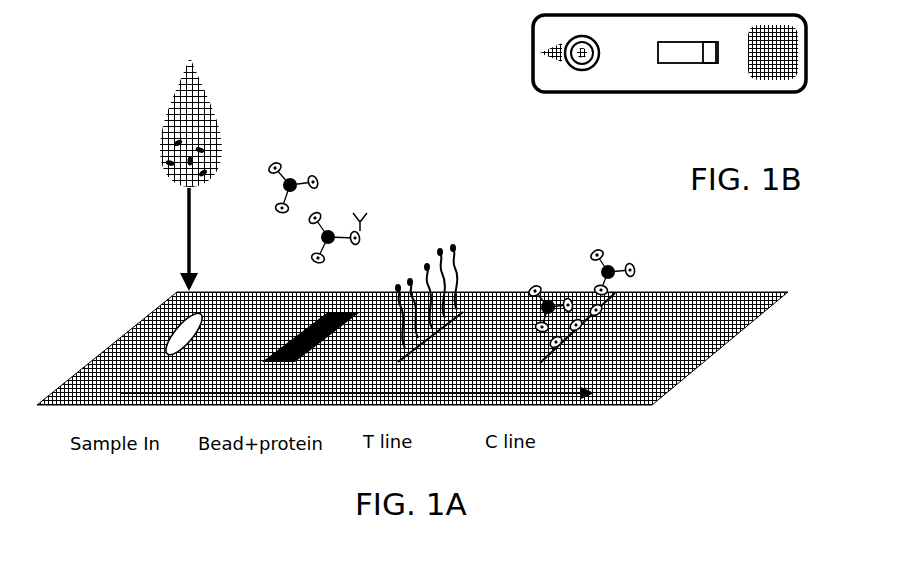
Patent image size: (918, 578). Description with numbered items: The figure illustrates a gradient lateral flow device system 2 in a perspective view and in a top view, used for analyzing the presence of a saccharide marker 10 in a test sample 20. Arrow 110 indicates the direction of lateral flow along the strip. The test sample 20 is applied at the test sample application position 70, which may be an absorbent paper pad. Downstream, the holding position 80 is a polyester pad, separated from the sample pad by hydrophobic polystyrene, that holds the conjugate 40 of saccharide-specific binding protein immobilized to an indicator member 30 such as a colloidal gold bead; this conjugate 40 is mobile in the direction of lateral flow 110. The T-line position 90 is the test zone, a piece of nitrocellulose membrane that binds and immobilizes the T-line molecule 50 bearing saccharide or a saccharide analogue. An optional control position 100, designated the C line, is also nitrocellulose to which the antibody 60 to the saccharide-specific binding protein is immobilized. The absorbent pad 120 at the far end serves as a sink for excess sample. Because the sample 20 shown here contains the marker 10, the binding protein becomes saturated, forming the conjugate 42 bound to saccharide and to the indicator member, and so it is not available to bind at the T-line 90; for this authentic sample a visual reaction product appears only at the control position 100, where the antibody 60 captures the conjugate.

In FIG. 1A, the lateral flow device system 2 is at (412, 237).
In FIG. 1A, the saccharide marker 10 is at (172, 153).
In FIG. 1A, the test sample 20 is at (188, 97).
In FIG. 1A, the indicator member 30 is at (268, 195).
In FIG. 1A, the conjugate of saccharide-specific binding protein bound to indicator member 40 is at (287, 175).
In FIG. 1A, the saccharide-specific binding protein bound to saccharide and to indicator member 42 is at (382, 218).
In FIG. 1A, the T-line molecule bound to saccharide or saccharide analogue 50 is at (455, 267).
In FIG. 1A, the antibody to saccharide-specific binding protein 60 is at (622, 295).
In FIG. 1A, the LFD test sample application position 70 is at (182, 333).
In FIG. 1B, the LFD test sample application position 70 is at (552, 58).
In FIG. 1A, the LFD position for holding mobile conjugate 80 is at (305, 327).
In FIG. 1B, the LFD position for holding mobile conjugate 80 is at (582, 53).
In FIG. 1A, the LFD position for device-bound T-line molecule 90 is at (446, 305).
In FIG. 1B, the LFD position for device-bound T-line molecule 90 is at (673, 80).
In FIG. 1A, the LFD position for device bound C-line antibody 100 is at (590, 327).
In FIG. 1B, the LFD position for device bound C-line antibody 100 is at (702, 80).
In FIG. 1A, the direction of lateral flow 110 is at (595, 395).
In FIG. 1B, the absorbent pad serving as a sink 120 is at (780, 72).